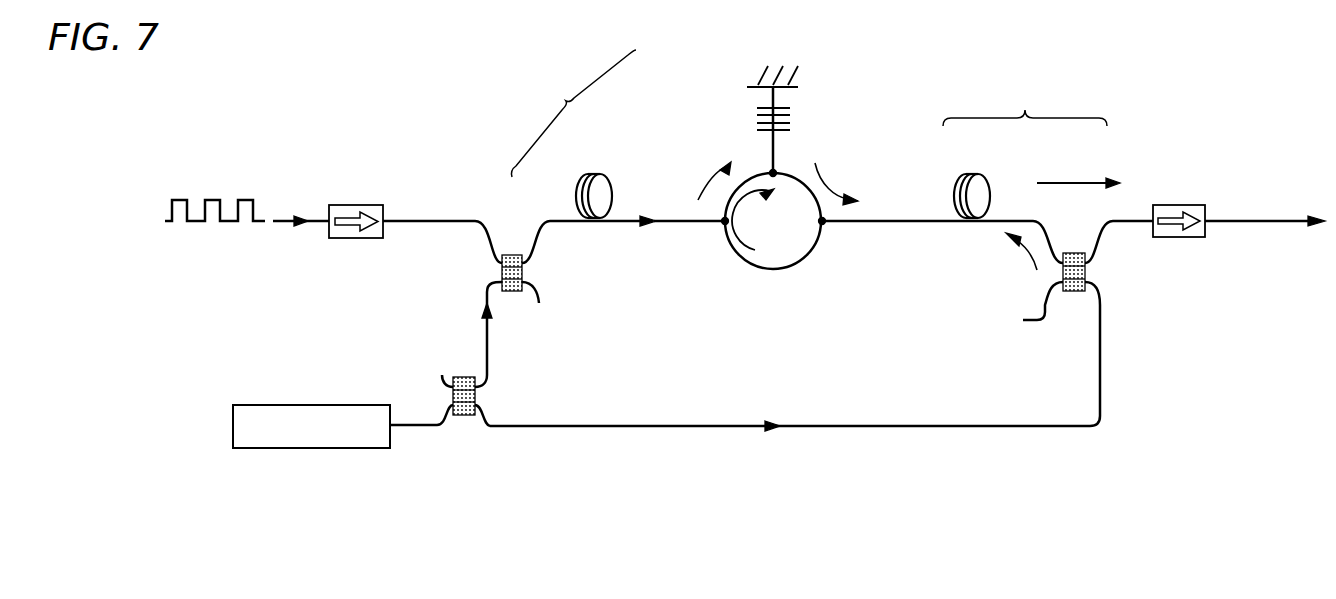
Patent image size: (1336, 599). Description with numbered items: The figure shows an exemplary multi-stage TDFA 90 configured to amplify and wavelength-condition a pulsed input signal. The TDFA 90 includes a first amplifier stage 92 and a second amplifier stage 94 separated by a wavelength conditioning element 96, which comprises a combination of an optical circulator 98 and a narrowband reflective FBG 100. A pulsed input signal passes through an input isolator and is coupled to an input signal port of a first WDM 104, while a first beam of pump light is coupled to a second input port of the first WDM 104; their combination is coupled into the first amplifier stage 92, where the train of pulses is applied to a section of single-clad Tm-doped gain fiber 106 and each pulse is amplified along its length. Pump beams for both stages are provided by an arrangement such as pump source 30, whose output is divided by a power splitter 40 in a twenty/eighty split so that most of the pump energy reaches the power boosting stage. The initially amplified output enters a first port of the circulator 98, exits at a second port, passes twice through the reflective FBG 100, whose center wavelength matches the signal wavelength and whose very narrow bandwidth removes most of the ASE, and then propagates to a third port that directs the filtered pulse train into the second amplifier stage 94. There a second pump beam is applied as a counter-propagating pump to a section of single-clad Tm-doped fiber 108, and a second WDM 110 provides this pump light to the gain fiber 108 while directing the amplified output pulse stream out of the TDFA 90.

The pump source 30 is at (339, 405).
The power splitter 40 is at (465, 377).
The multi-stage TDFA 90 is at (168, 100).
The first amplifier stage 92 is at (561, 104).
The second amplifier stage 94 is at (1040, 102).
The wavelength conditioning element 96 is at (838, 114).
The optical circulator 98 is at (806, 258).
The reflective FBG 100 is at (756, 120).
The first WDM 104 is at (524, 273).
The single-clad Tm-doped gain fiber 106 is at (574, 193).
The single-clad Tm-doped fiber 108 is at (968, 170).
The second WDM 110 is at (1087, 272).